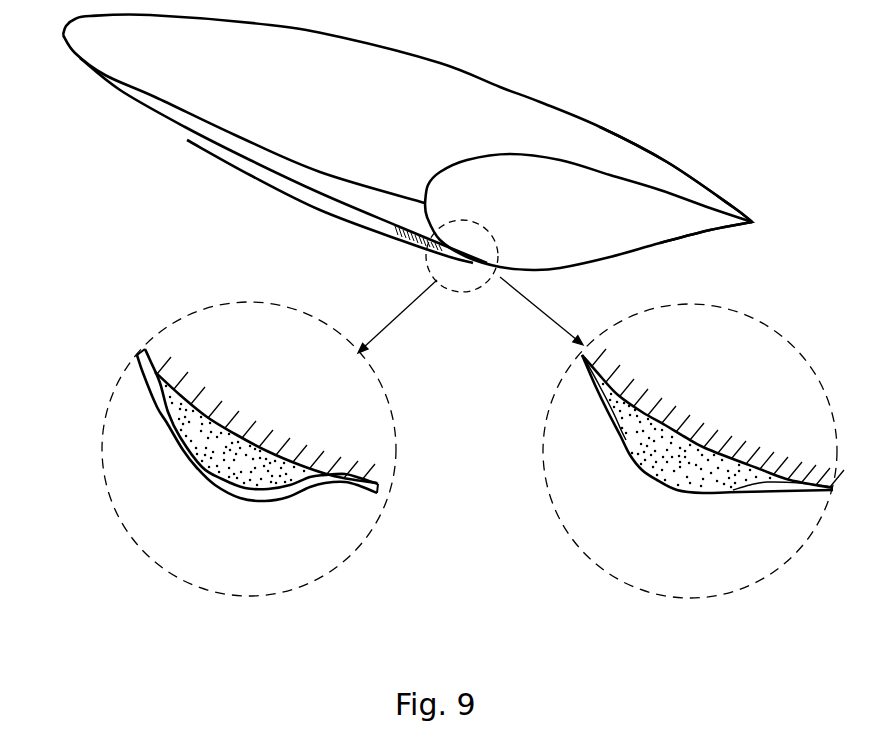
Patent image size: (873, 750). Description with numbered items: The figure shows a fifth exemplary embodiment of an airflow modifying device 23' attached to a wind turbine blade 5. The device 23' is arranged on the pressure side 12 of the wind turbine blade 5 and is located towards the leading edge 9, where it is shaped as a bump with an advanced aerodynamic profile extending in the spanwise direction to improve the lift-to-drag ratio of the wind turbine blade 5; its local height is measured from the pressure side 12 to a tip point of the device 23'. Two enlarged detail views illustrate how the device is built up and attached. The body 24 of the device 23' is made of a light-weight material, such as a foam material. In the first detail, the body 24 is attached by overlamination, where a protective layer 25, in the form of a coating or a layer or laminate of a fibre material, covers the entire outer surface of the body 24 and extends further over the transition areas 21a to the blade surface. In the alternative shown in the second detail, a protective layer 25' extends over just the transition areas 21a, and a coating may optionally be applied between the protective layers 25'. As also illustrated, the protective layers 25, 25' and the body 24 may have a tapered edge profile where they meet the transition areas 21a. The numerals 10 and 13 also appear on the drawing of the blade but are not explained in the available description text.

The wind turbine blade 5 is at (523, 128).
The leading edge 9 is at (136, 98).
The trailing edge 10 is at (687, 170).
The pressure side 12 is at (186, 127).
The wind turbine blade 13 is at (383, 114).
The airflow modifying device 23' is at (330, 216).
The transition areas 21a is at (146, 403).
The body 24 is at (233, 470).
The protective layer 25 is at (219, 475).
The protective layer 25' is at (655, 466).